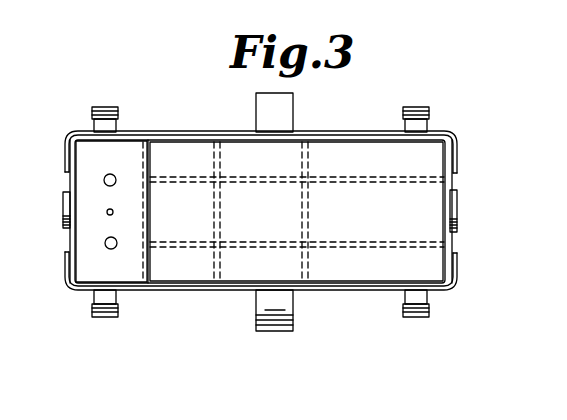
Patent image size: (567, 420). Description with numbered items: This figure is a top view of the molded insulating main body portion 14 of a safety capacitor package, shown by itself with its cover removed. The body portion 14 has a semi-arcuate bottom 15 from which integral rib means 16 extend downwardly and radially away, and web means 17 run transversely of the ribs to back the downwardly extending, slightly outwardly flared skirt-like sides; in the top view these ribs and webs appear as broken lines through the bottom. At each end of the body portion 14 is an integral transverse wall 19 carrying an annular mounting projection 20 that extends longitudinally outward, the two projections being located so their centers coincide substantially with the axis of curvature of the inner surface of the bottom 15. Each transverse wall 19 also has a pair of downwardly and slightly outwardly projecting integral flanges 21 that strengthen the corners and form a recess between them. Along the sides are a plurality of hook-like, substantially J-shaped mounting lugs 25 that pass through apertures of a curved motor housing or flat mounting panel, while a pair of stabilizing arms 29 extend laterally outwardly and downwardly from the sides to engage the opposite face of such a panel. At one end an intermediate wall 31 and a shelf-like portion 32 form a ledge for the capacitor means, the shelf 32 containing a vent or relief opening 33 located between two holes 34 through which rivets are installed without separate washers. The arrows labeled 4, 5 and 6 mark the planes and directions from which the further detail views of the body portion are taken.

The main body portion 14 is at (340, 133).
The semi-arcuate bottom 15 is at (368, 145).
The rib means 16 is at (197, 184).
The web means 17 is at (213, 161).
The transverse wall 19 is at (70, 247).
The annular mounting projection 20 is at (63, 227).
The flange 21 is at (66, 150).
The J-shaped mounting lug 25 is at (105, 106).
The stabilizing arm 29 is at (283, 106).
The intermediate wall 31 is at (152, 152).
The shelf-like portion 32 is at (127, 147).
The vent opening 33 is at (108, 215).
The hole 34 is at (114, 184).
The section line 4 is at (52, 212).
The section line 5 is at (410, 104).
The section line 6 is at (274, 125).